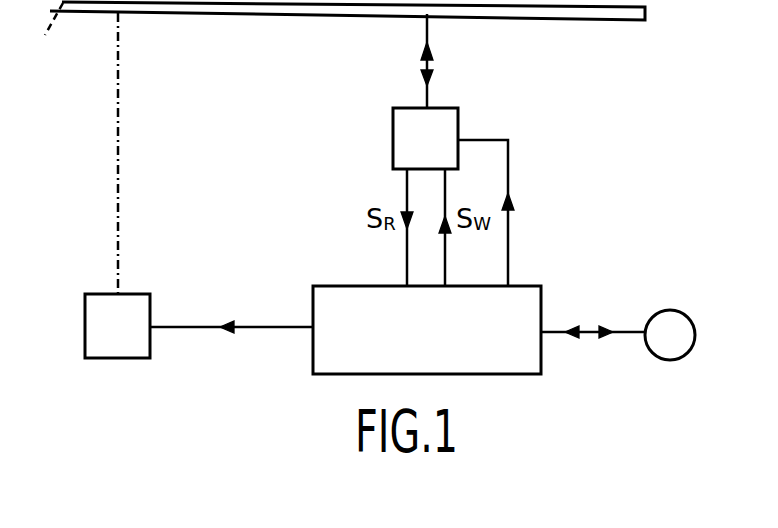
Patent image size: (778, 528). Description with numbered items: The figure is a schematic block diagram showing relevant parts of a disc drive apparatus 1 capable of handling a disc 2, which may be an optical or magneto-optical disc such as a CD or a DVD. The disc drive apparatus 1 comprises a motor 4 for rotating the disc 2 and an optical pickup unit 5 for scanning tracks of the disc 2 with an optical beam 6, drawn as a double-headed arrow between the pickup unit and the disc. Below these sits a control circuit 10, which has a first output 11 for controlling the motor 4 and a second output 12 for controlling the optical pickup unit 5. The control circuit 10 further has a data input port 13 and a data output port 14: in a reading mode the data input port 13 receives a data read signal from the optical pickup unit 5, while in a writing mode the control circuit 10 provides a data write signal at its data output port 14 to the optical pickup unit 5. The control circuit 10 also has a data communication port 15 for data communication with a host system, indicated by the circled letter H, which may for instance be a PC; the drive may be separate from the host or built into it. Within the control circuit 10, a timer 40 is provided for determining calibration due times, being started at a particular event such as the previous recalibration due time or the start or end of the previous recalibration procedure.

The disc drive apparatus 1 is at (633, 93).
The disc 2 is at (525, 20).
The motor 4 is at (124, 338).
The optical pickup unit 5 is at (434, 152).
The optical beam 6 is at (428, 63).
The control circuit 10 is at (444, 360).
The first output 11 is at (250, 327).
The second output 12 is at (494, 229).
The data input port 13 is at (409, 244).
The data output port 14 is at (453, 244).
The data communication port 15 is at (594, 335).
The timer 40 is at (372, 345).